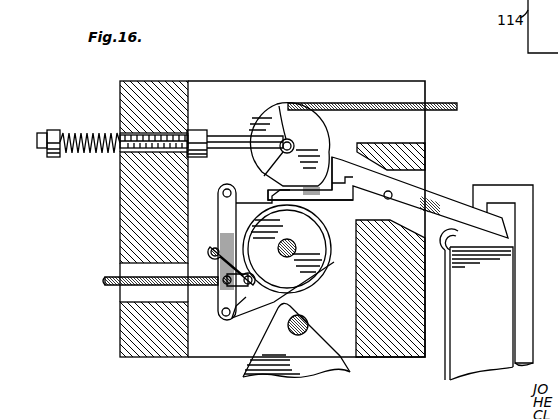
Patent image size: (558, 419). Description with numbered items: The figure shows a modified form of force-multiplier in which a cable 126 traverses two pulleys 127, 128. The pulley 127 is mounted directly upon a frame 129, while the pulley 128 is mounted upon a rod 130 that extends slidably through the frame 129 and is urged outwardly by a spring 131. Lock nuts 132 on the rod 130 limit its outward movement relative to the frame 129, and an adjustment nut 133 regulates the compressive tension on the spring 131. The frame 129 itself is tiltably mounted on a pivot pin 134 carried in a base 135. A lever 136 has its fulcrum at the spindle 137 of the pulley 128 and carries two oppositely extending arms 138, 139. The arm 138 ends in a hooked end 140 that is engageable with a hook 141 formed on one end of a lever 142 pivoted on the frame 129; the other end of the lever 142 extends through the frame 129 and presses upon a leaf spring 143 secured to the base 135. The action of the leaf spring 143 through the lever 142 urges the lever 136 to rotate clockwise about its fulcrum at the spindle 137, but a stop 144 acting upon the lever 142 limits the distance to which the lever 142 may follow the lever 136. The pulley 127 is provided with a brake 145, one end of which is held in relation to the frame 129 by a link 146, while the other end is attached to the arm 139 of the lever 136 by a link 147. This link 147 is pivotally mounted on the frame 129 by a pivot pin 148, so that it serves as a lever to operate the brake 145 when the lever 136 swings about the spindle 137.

The cable 126 is at (436, 104).
The pulley 127 is at (315, 247).
The pulley 128 is at (310, 127).
The frame 129 is at (133, 230).
The rod 130 is at (233, 137).
The spring 131 is at (92, 132).
The lock nuts 132 is at (200, 130).
The adjustment nut 133 is at (53, 132).
The pivot pin 134 is at (296, 334).
The base 135 is at (350, 369).
The lever 136 is at (273, 168).
The spindle 137 is at (278, 107).
The arm 138 is at (317, 200).
The arm 139 is at (240, 190).
The hooked end 140 is at (357, 191).
The hook 141 is at (333, 172).
The lever 142 is at (442, 188).
The leaf spring 143 is at (487, 246).
The stop 144 is at (482, 206).
The brake 145 is at (313, 283).
The link 146 is at (228, 262).
The link 147 is at (223, 227).
The pivot pin 148 is at (222, 287).